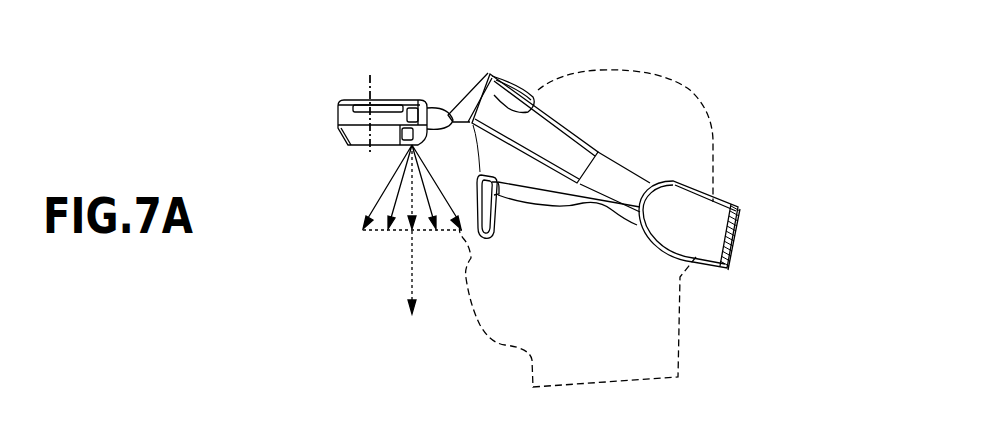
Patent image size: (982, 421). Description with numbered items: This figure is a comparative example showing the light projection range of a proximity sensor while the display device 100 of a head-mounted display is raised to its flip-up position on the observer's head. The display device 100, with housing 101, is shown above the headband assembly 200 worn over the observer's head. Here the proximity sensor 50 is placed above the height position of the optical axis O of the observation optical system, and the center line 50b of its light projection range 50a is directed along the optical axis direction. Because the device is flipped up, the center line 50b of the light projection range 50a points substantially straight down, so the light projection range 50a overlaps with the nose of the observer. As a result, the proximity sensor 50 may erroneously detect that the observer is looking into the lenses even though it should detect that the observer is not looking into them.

The display device 100 is at (361, 87).
The housing 101 is at (338, 116).
The proximity sensor 50 is at (408, 146).
The light projection range 50a is at (366, 233).
The center line 50b is at (408, 289).
The head-mounted display 200 is at (523, 67).
The optical axis O is at (370, 80).